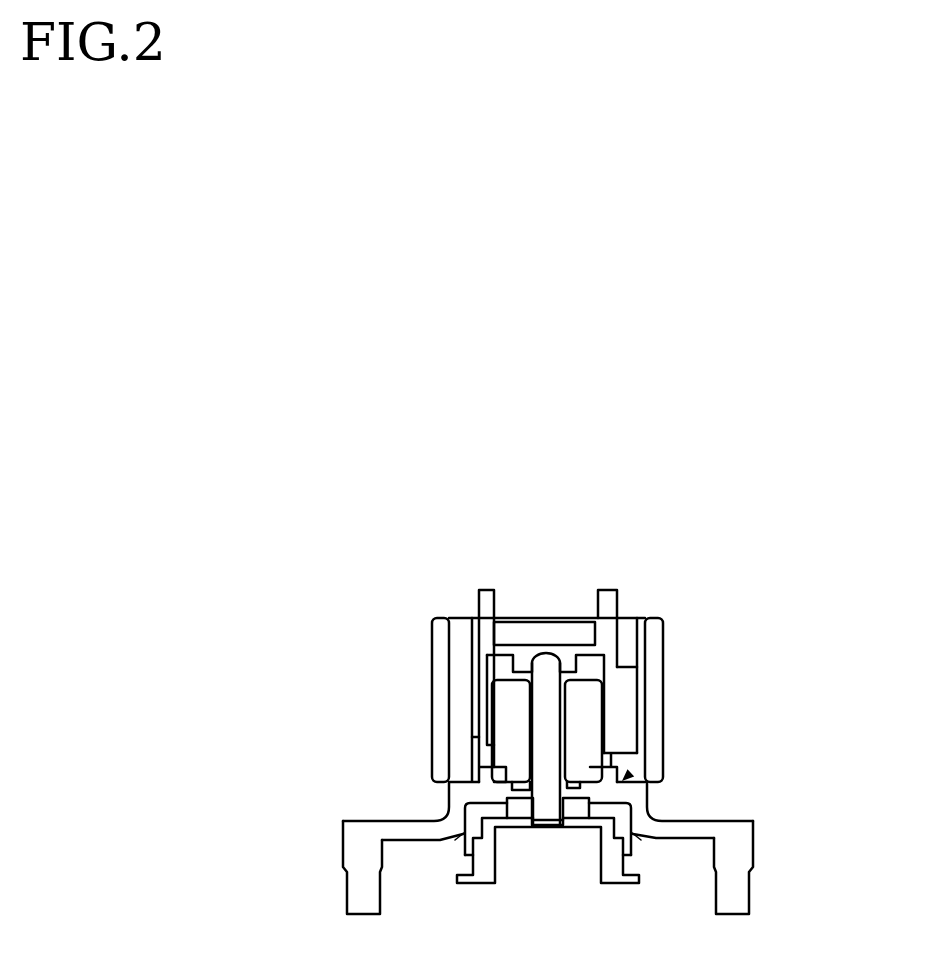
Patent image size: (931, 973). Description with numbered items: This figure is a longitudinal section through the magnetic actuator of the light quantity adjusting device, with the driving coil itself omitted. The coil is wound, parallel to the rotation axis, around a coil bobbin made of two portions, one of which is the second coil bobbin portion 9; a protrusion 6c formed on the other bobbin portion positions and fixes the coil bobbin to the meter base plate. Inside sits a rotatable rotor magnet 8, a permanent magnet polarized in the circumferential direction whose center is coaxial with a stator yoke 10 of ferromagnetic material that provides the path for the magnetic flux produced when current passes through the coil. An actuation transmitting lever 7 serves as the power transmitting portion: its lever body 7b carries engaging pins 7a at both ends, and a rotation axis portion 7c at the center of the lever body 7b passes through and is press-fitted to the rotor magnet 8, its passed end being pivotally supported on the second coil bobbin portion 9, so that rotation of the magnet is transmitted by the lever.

The stator yoke 10 is at (392, 630).
The second coil bobbin portion 9 is at (560, 577).
The rotor magnet 8 is at (492, 745).
The actuation transmitting lever 7 is at (551, 816).
The engaging pins 7a is at (358, 852).
The lever body 7b is at (697, 822).
The rotation axis portion 7c is at (553, 708).
The protrusion 6c is at (603, 860).